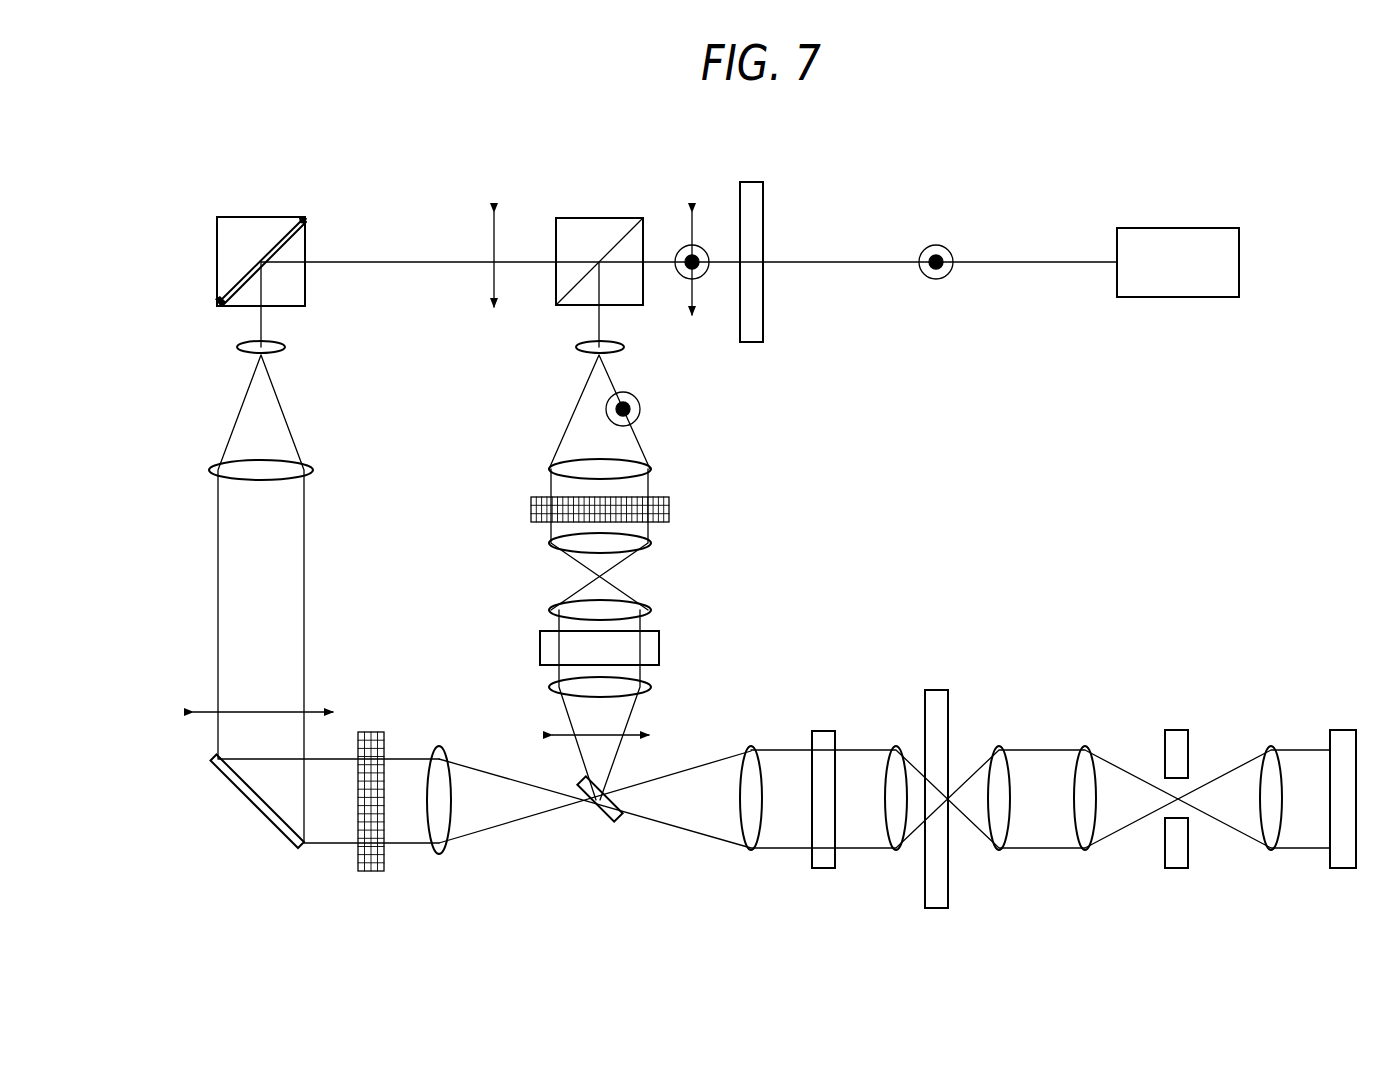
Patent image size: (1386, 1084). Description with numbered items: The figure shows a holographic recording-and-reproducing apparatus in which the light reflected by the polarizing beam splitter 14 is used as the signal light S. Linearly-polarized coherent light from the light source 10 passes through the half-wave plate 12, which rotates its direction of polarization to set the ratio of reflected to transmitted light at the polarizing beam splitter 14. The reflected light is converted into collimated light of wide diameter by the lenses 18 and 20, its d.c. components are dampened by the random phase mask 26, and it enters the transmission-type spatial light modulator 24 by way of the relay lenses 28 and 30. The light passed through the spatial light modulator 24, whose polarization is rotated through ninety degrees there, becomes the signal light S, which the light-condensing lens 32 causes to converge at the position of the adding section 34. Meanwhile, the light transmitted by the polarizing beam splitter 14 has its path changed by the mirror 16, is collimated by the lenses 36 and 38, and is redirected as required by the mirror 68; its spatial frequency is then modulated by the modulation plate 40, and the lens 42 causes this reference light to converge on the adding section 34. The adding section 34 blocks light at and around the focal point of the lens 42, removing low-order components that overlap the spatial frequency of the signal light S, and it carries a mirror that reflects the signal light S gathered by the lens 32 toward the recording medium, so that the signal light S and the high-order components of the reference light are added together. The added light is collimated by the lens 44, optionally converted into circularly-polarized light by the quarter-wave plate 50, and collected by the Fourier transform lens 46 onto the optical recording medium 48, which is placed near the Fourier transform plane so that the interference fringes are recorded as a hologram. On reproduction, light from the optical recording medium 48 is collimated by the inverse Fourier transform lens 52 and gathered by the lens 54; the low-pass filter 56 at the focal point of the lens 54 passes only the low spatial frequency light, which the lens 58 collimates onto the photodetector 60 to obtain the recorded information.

The light source 10 is at (1180, 228).
The λ/2 plate 12 is at (755, 182).
The polarizing beam splitter 14 is at (600, 218).
The mirror 16 is at (263, 217).
The lens 18 is at (576, 347).
The lens 20 is at (549, 469).
The spatial light modulator 24 is at (540, 649).
The random phase mask 26 is at (531, 510).
The relay lens 28 is at (549, 543).
The relay lens 30 is at (549, 610).
The light-condensing lens 32 is at (549, 687).
The adding section 34 is at (614, 822).
The lens 36 is at (237, 347).
The lens 38 is at (209, 470).
The modulation plate 40 is at (371, 732).
The lens 42 is at (439, 747).
The lens 44 is at (751, 747).
The Fourier transform lens 46 is at (896, 747).
The optical recording medium 48 is at (937, 690).
The λ/4 plate 50 is at (824, 731).
The inverse Fourier transform lens 52 is at (999, 747).
The lens 54 is at (1085, 747).
The low-pass filter 56 is at (1176, 730).
The lens 58 is at (1271, 747).
The photodetector 60 is at (1343, 730).
The mirror 68 is at (253, 807).
The signal light S is at (633, 713).